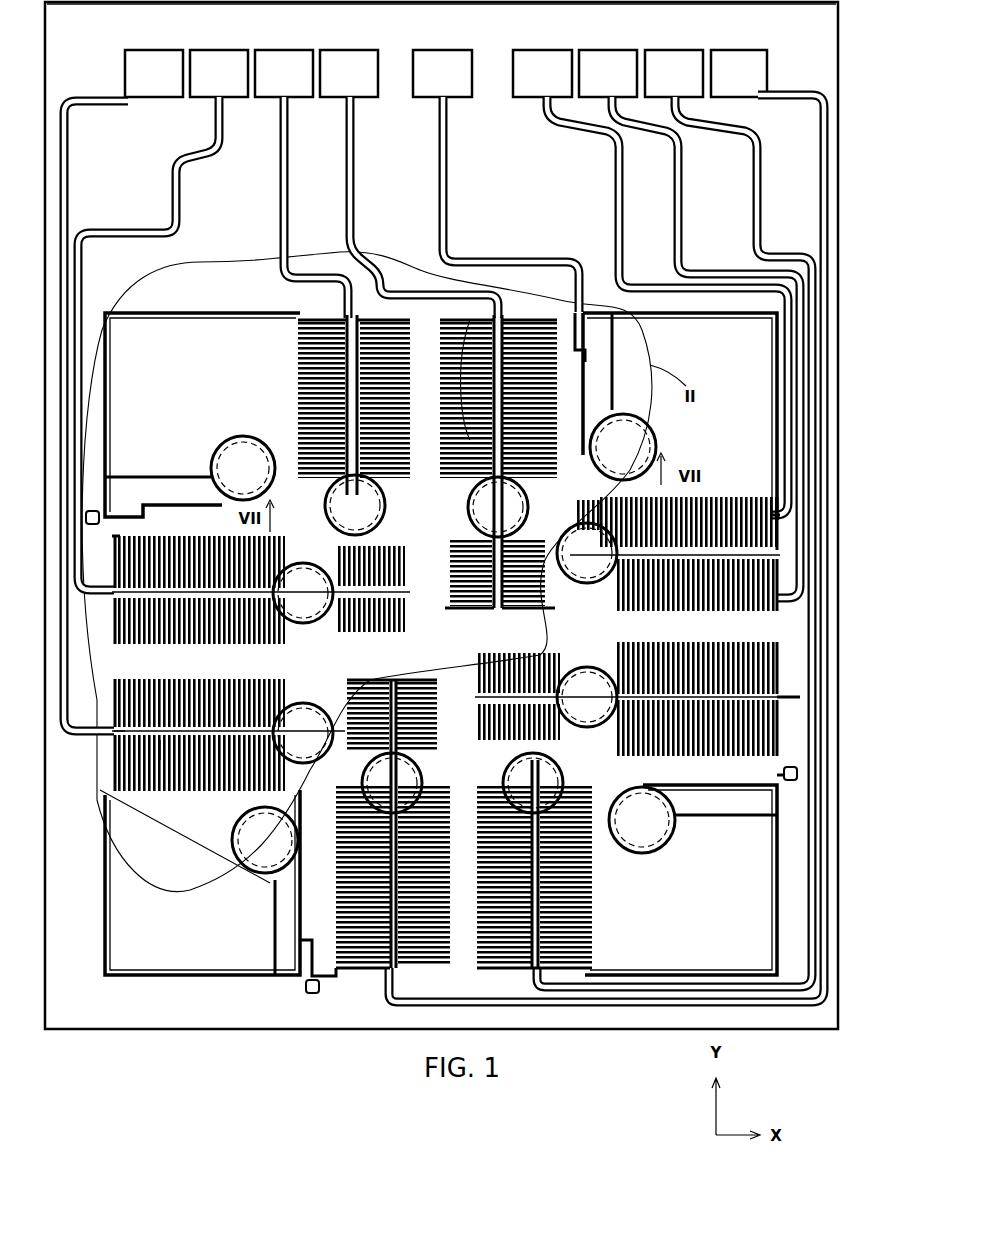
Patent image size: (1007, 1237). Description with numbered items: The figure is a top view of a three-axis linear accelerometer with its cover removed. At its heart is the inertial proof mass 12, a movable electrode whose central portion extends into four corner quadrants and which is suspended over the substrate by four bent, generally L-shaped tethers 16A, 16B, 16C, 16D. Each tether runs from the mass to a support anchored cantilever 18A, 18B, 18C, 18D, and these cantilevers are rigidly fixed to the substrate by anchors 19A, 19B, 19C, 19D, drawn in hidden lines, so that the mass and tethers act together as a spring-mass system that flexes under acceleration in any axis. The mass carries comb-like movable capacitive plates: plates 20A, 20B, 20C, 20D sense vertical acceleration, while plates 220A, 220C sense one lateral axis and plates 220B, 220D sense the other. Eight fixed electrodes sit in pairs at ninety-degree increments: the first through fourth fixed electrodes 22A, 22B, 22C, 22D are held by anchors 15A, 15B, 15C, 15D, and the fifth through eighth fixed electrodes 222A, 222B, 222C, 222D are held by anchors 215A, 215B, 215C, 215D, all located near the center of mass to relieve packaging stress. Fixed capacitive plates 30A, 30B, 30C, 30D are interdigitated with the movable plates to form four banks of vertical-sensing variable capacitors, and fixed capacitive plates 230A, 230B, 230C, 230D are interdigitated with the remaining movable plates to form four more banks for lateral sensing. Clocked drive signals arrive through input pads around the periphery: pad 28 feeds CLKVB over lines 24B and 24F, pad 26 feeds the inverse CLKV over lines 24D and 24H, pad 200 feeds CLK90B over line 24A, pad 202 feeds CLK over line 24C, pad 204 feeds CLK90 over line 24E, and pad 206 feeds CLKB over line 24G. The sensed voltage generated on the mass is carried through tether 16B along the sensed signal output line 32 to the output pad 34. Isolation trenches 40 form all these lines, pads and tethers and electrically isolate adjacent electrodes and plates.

The input pad 200 is at (160, 50).
The input pad 28 is at (222, 50).
The input pad 202 is at (286, 50).
The input pad 26 is at (350, 50).
The output pad 34 is at (445, 50).
The input pad 204 is at (548, 50).
The input pad 206 is at (682, 50).
The signal input line 24A is at (70, 142).
The signal input line 24B is at (193, 148).
The signal input line 24C is at (280, 162).
The signal input line 24D is at (345, 158).
The signal input line 24E is at (594, 160).
The signal input line 24F is at (672, 160).
The signal input line 24G is at (740, 122).
The signal input line 24H is at (786, 96).
The sensed signal output line 32 is at (438, 145).
The inertial proof mass 12 is at (163, 375).
The isolation trenches 40 is at (91, 527).
The bent L-shaped tether 16A is at (155, 313).
The bent L-shaped tether 16B is at (680, 314).
The bent L-shaped tether 16C is at (770, 845).
The bent L-shaped tether 16D is at (135, 976).
The support anchored cantilever 18A is at (165, 478).
The support anchored cantilever 18B is at (618, 390).
The support anchored cantilever 18C is at (710, 808).
The support anchored cantilever 18D is at (272, 915).
The anchor 19A is at (212, 437).
The anchor 19B is at (662, 435).
The anchor 19C is at (675, 838).
The anchor 19D is at (240, 880).
The first movable capacitive plates 20A is at (140, 540).
The second movable capacitive plates 20B is at (480, 320).
The third movable capacitive plates 20C is at (705, 655).
The fourth movable capacitive plates 20D is at (345, 940).
The first fixed electrode 22A is at (130, 606).
The second fixed electrode 22B is at (506, 318).
The third fixed electrode 22C is at (742, 660).
The fourth fixed electrode 22D is at (388, 972).
The first fixed capacitive plates 30A is at (138, 634).
The second fixed capacitive plates 30B is at (570, 352).
The third fixed capacitive plates 30C is at (735, 752).
The fourth fixed capacitive plates 30D is at (420, 912).
The fifth movable capacitive plates 220A is at (160, 772).
The sixth movable capacitive plates 220B is at (300, 355).
The seventh movable capacitive plates 220C is at (715, 500).
The eighth movable capacitive plates 220D is at (445, 930).
The fifth fixed capacitive plates 230A is at (185, 780).
The sixth fixed capacitive plates 230B is at (398, 372).
The seventh fixed capacitive plates 230C is at (660, 612).
The eighth fixed capacitive plates 230D is at (590, 856).
The fifth fixed electrode 222A is at (108, 742).
The sixth fixed electrode 222B is at (350, 312).
The seventh fixed electrode 222C is at (760, 512).
The eighth fixed electrode 222D is at (588, 908).
The anchor 215A is at (318, 705).
The anchor 215B is at (386, 524).
The anchor 215C is at (580, 585).
The anchor 215D is at (503, 765).
The anchor 15A is at (318, 618).
The anchor 15B is at (470, 535).
The anchor 15C is at (570, 668).
The anchor 15D is at (416, 748).